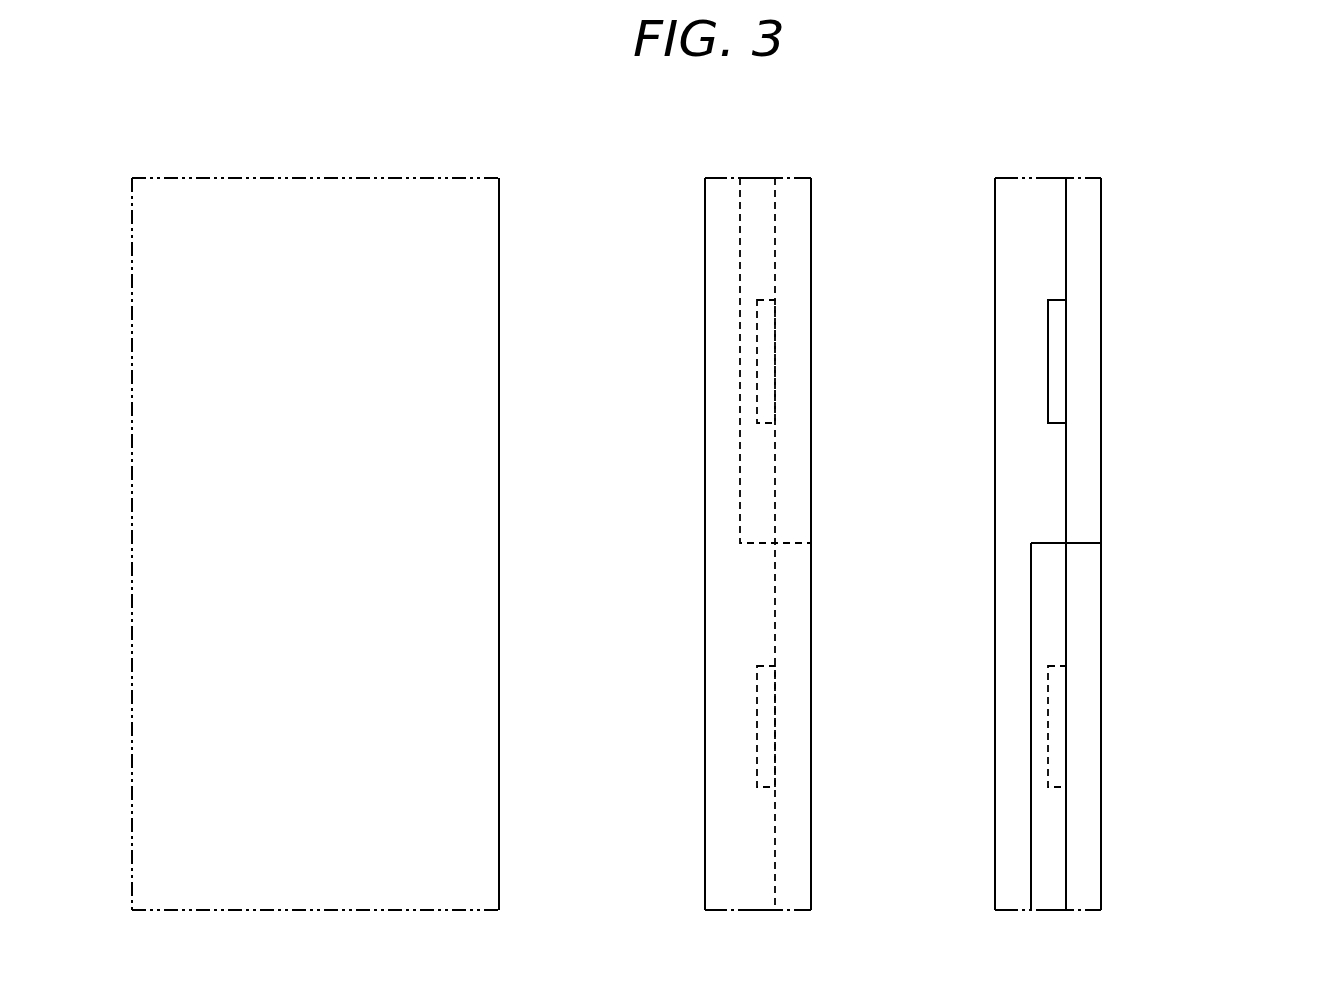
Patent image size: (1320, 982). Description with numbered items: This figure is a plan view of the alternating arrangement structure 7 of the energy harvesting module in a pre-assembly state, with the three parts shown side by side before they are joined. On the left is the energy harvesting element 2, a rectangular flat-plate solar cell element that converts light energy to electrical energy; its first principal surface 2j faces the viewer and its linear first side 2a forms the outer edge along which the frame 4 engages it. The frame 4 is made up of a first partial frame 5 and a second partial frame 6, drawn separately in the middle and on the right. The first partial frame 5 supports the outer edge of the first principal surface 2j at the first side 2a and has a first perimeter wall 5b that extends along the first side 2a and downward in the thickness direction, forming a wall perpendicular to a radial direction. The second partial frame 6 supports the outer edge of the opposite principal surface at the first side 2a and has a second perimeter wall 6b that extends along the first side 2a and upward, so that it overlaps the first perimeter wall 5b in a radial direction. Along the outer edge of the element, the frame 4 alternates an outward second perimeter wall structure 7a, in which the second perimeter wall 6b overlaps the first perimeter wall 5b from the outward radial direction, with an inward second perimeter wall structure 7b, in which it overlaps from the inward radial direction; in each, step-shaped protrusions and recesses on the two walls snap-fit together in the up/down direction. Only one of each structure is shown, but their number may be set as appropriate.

The energy harvesting element 2 is at (325, 178).
The first principal surface 2j is at (382, 223).
The first side 2a is at (499, 550).
The frame 4 is at (742, 505).
The first partial frame 5 is at (755, 178).
The first perimeter wall 5b is at (740, 455).
The second partial frame 6 is at (1045, 178).
The second perimeter wall 6b is at (1066, 497).
The alternating arrangement structure 7 is at (1114, 505).
The outward second perimeter wall structure 7a is at (1145, 372).
The inward second perimeter wall structure 7b is at (1145, 715).